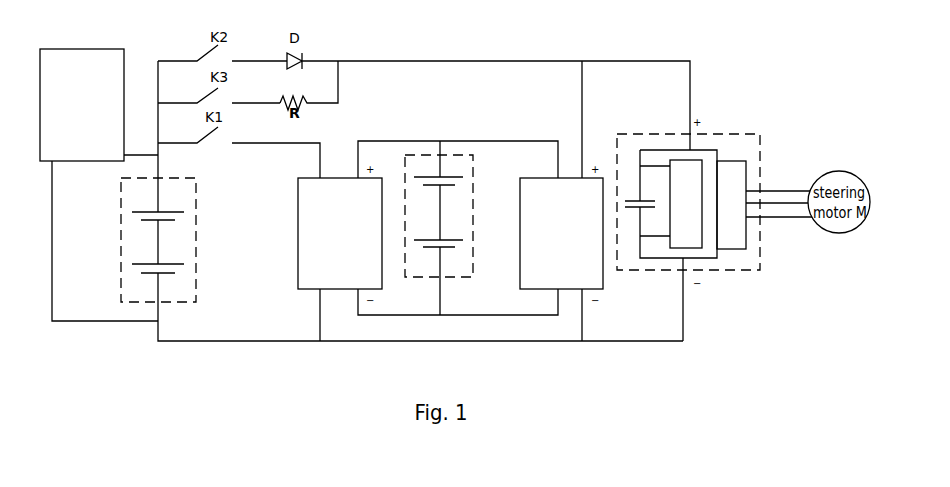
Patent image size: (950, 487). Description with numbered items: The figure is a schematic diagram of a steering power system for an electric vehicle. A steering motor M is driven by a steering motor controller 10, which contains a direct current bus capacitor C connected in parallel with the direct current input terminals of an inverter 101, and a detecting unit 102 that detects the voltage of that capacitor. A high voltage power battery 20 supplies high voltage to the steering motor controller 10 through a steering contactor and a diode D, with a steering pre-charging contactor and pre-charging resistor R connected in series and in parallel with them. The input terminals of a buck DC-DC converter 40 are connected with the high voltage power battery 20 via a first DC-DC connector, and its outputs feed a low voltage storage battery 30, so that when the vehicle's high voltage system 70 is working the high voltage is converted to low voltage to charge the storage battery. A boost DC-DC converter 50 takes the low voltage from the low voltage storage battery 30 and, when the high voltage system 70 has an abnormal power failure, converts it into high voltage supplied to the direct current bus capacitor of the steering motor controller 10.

The high voltage system 70 is at (113, 48).
The high voltage power battery 20 is at (120, 212).
The buck DC-DC converter 40 is at (297, 218).
The low voltage storage battery 30 is at (473, 187).
The boost DC-DC converter 50 is at (520, 240).
The steering motor controller 10 is at (708, 184).
The inverter 101 is at (745, 160).
The detecting unit 102 is at (667, 162).